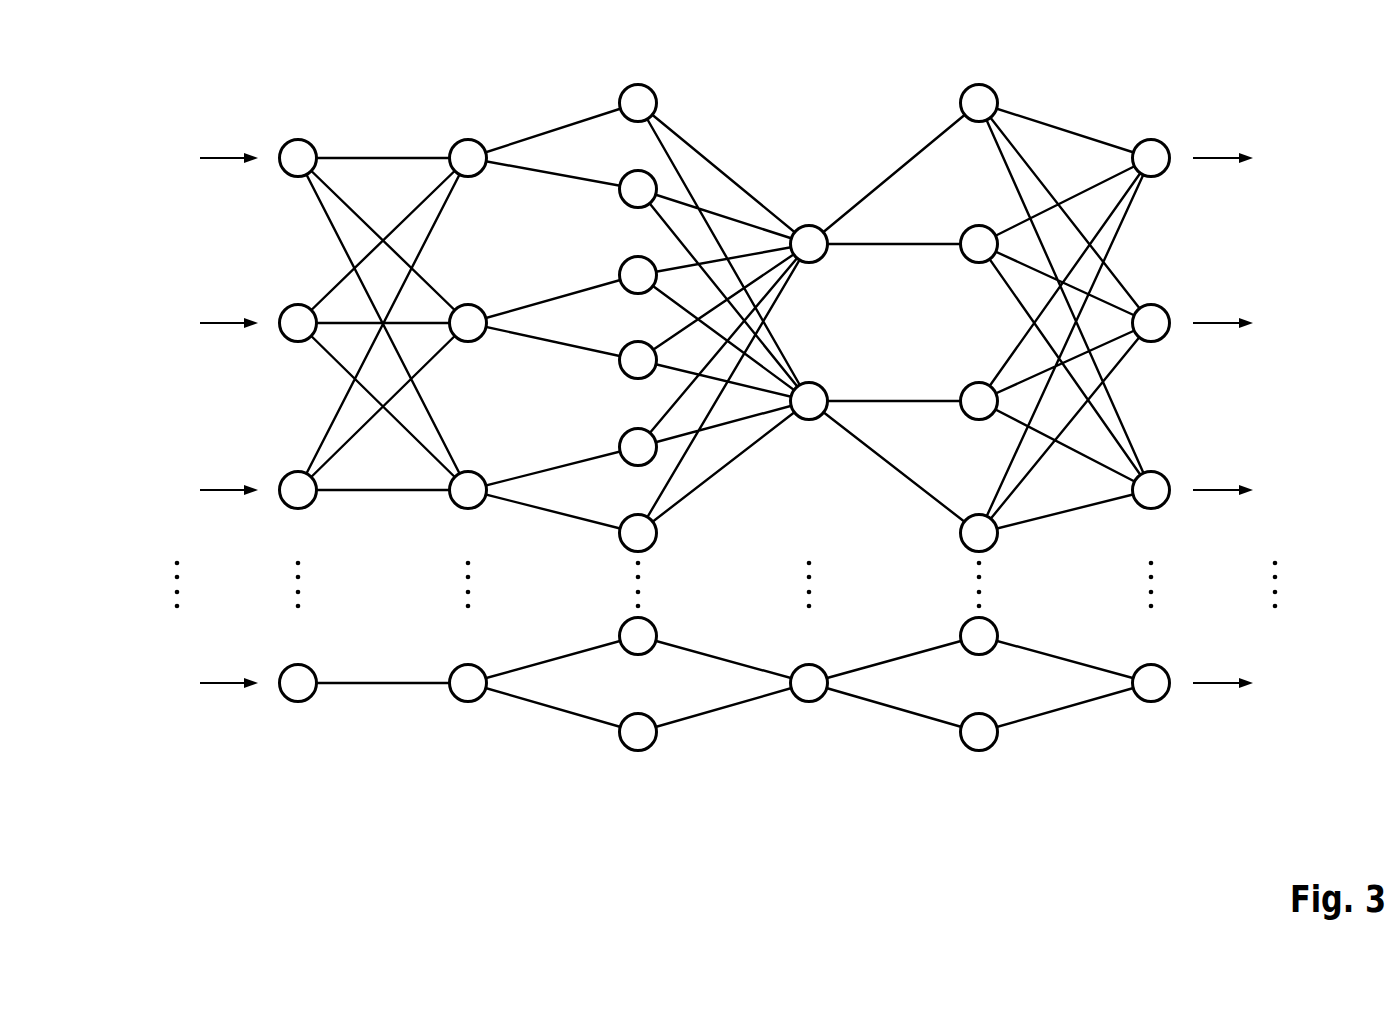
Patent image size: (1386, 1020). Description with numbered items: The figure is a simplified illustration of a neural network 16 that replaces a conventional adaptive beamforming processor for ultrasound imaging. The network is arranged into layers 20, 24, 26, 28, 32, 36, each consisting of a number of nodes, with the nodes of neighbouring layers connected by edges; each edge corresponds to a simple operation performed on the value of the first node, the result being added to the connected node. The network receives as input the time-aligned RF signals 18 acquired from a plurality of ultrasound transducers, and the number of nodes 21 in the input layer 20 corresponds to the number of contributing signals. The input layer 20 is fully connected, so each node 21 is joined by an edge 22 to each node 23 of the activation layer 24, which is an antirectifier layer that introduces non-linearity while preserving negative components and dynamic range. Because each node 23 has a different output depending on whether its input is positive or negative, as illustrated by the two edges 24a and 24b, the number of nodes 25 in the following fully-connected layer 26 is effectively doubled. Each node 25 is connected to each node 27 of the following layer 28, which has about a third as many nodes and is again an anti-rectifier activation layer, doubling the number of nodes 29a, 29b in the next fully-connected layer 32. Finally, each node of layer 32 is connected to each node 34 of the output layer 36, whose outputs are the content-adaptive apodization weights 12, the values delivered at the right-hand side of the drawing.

The output values 12 is at (1274, 740).
The neural network 16 is at (160, 67).
The time-aligned RF signals 18 is at (174, 740).
The input layer 20 is at (289, 441).
The node of the input layer 21 is at (297, 139).
The edge 22 is at (385, 156).
The node of the activation layer 23 is at (469, 139).
The activation layer 24 is at (463, 441).
The edge 24a is at (560, 122).
The edge 24b is at (543, 175).
The node of the following layer 25 is at (640, 84).
The fully-connected layer 26 is at (634, 431).
The node of the following layer 27 is at (809, 225).
The activation layer 28 is at (803, 485).
The node of the fully-connected layer 29a is at (981, 84).
The node of the fully-connected layer 29b is at (982, 226).
The fully-connected layer 32 is at (978, 431).
The node of the output layer 34 is at (1151, 139).
The output layer 36 is at (1146, 441).